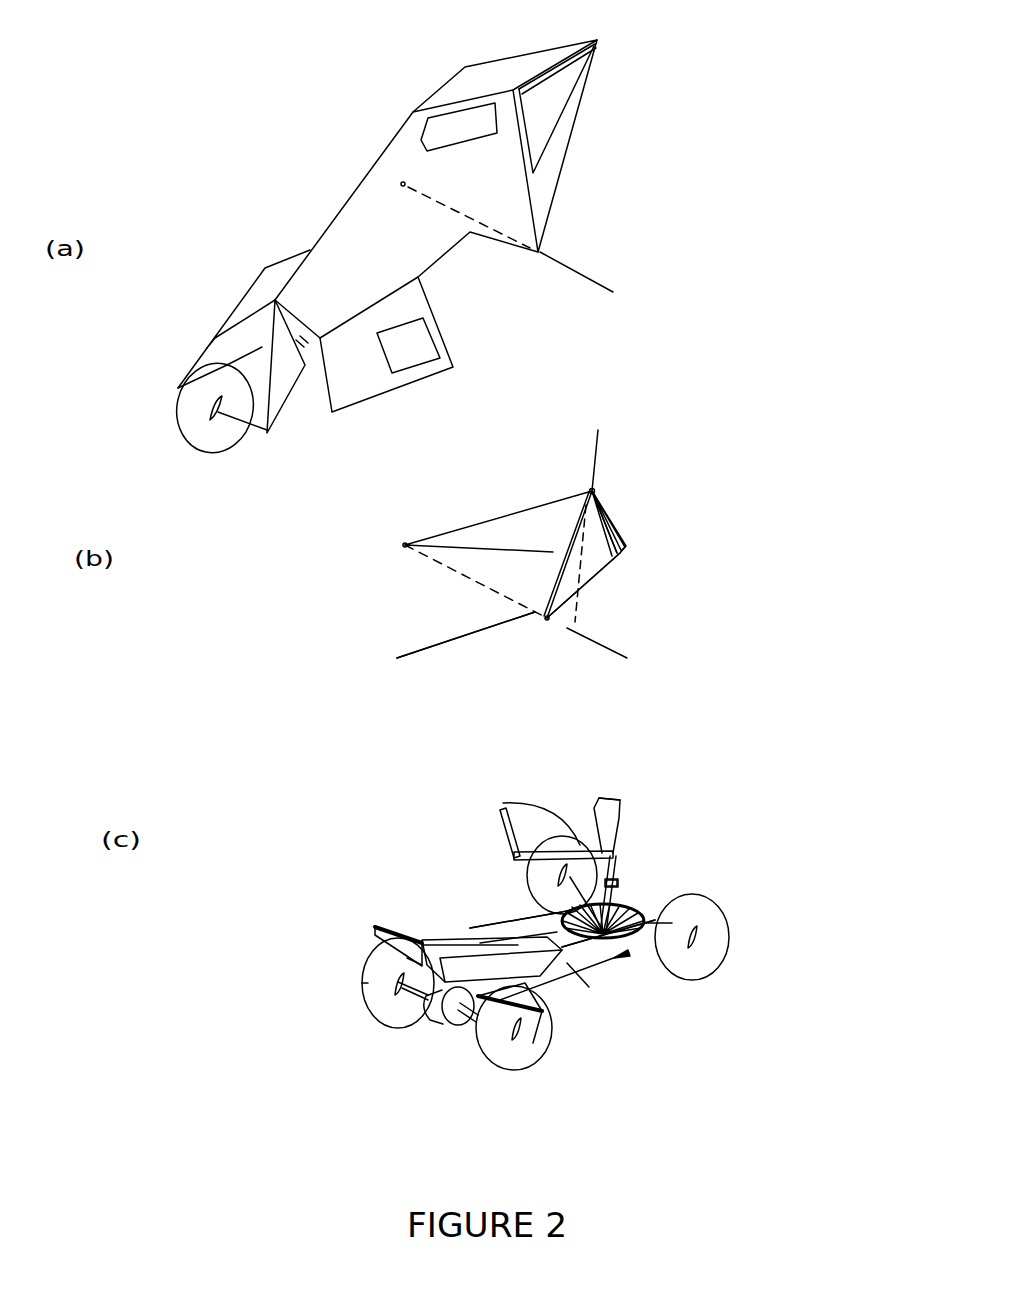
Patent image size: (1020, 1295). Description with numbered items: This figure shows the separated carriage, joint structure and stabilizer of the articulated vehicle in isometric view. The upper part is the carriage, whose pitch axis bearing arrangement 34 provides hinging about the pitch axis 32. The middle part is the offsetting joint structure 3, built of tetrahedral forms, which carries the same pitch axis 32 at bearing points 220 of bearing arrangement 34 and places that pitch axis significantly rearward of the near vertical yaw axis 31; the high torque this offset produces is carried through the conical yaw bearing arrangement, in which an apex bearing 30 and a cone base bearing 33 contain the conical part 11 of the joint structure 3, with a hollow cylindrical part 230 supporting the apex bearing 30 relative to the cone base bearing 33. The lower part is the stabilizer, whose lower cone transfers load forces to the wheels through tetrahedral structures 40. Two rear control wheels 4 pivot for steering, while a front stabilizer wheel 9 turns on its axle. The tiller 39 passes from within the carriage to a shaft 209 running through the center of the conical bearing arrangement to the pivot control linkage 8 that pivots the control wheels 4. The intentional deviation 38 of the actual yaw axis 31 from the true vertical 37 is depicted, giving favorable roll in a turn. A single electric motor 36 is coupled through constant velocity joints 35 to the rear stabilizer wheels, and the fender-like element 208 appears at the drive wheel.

The joint structure 3 is at (605, 568).
The control wheel 4 is at (365, 990).
The linkage 8 is at (480, 1045).
The front stabilizer wheel 9 is at (530, 895).
The conical part 11 is at (608, 512).
The apex bearing 30 is at (596, 490).
The yaw axis 31 is at (590, 484).
The pitch axis 32 is at (447, 208).
The cone base bearing 33 is at (614, 565).
The pitch axis bearing arrangement 34 is at (403, 184).
The constant velocity joints 35 is at (392, 1028).
The electric motor 36 is at (432, 1018).
The true vertical 37 is at (593, 823).
The intentional deviation 38 is at (613, 757).
The tiller 39 is at (535, 815).
The tetrahedral structures 40 is at (628, 957).
The fender 208 is at (528, 865).
The vertical shaft 209 is at (617, 883).
The bearing points 220 is at (400, 574).
The hollow cylindrical part 230 is at (623, 880).